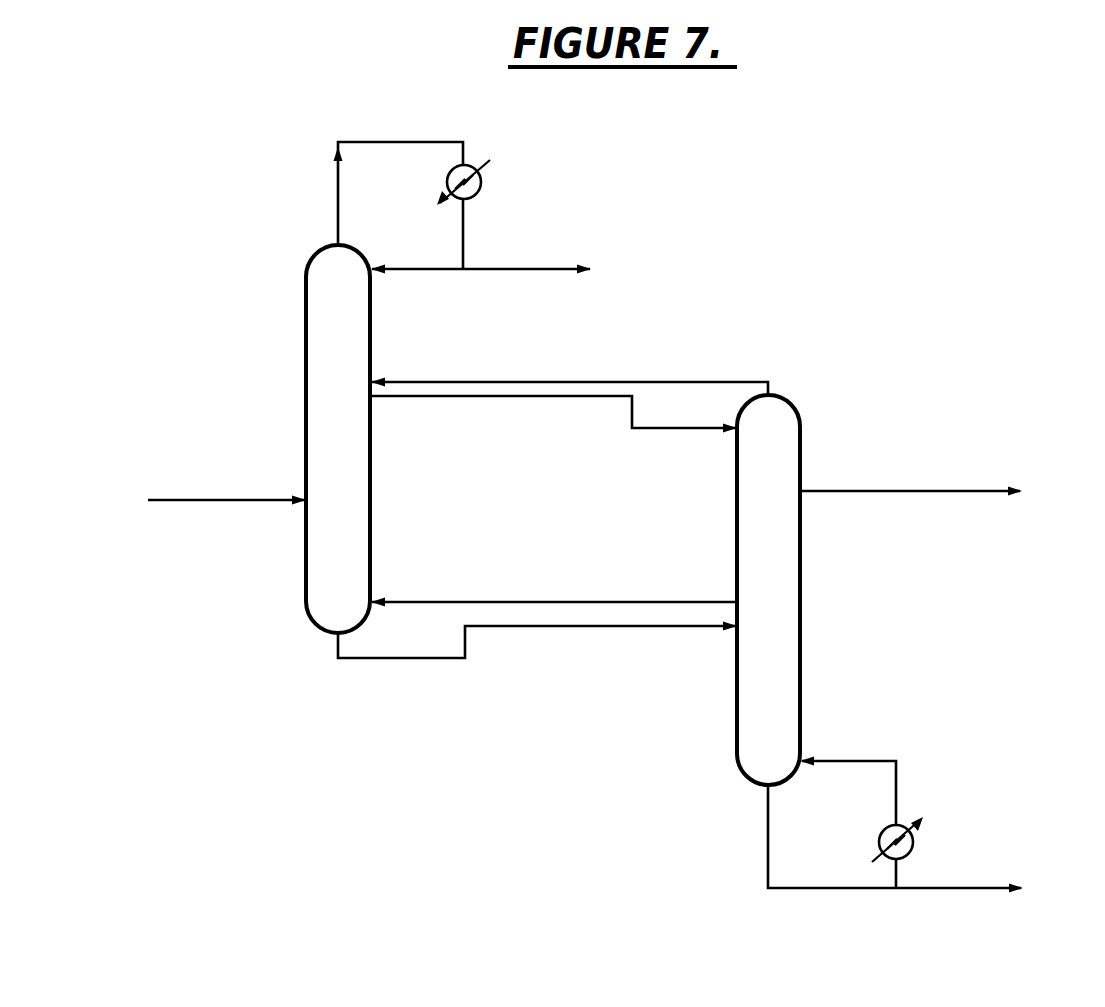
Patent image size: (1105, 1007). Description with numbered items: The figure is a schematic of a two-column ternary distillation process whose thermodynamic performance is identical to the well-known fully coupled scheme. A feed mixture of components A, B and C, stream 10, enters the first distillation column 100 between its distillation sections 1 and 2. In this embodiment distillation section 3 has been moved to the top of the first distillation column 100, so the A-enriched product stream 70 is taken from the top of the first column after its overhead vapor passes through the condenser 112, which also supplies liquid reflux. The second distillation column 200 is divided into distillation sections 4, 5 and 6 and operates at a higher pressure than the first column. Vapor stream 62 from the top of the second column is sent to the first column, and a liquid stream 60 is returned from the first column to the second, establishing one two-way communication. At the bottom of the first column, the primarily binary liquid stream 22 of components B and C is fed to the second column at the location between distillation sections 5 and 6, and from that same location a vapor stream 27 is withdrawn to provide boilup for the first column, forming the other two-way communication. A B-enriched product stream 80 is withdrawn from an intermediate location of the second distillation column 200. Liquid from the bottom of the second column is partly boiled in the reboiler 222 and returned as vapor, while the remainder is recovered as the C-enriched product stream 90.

The feed mixture stream 10 is at (216, 503).
The liquid stream 22 is at (655, 628).
The vapor stream 27 is at (655, 600).
The liquid stream 60 is at (654, 430).
The vapor stream 62 is at (654, 378).
The A-enriched product stream 70 is at (521, 267).
The B-enriched product stream 80 is at (900, 488).
The C-enriched product stream 90 is at (948, 893).
The first distillation column 100 is at (373, 538).
The condenser 112 is at (480, 171).
The second distillation column 200 is at (801, 642).
The reboiler 222 is at (915, 830).
The distillation section 1 is at (330, 452).
The distillation section 2 is at (330, 562).
The distillation section 3 is at (330, 333).
The distillation section 4 is at (761, 467).
The distillation section 5 is at (761, 562).
The distillation section 6 is at (761, 689).